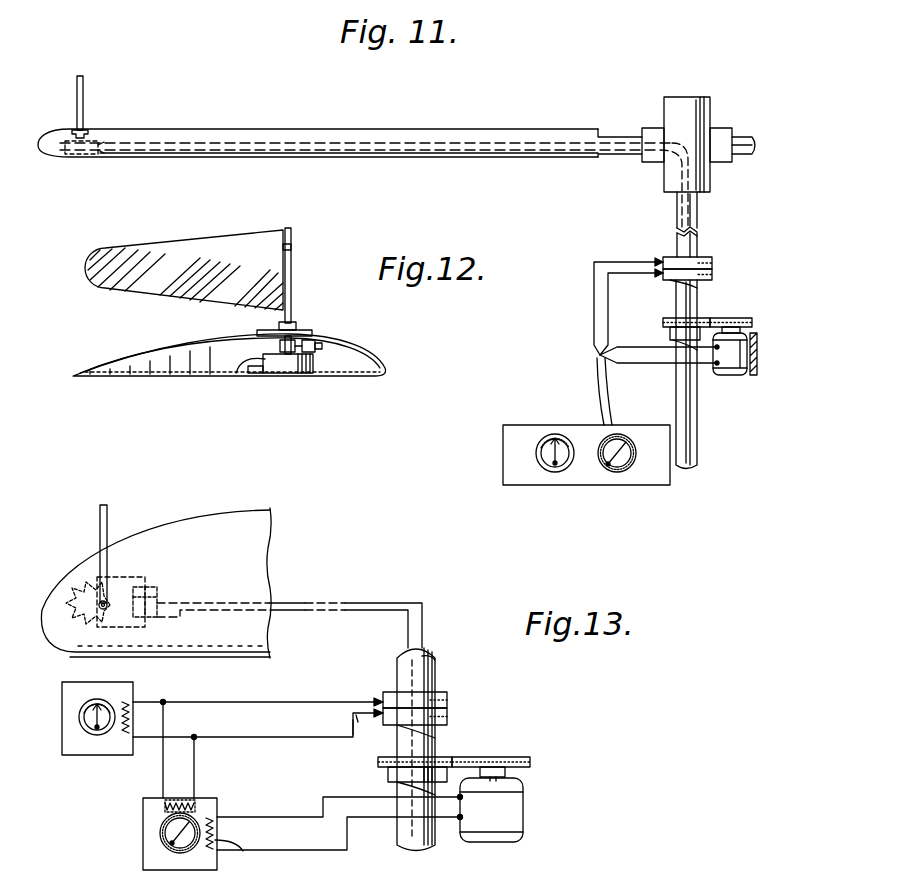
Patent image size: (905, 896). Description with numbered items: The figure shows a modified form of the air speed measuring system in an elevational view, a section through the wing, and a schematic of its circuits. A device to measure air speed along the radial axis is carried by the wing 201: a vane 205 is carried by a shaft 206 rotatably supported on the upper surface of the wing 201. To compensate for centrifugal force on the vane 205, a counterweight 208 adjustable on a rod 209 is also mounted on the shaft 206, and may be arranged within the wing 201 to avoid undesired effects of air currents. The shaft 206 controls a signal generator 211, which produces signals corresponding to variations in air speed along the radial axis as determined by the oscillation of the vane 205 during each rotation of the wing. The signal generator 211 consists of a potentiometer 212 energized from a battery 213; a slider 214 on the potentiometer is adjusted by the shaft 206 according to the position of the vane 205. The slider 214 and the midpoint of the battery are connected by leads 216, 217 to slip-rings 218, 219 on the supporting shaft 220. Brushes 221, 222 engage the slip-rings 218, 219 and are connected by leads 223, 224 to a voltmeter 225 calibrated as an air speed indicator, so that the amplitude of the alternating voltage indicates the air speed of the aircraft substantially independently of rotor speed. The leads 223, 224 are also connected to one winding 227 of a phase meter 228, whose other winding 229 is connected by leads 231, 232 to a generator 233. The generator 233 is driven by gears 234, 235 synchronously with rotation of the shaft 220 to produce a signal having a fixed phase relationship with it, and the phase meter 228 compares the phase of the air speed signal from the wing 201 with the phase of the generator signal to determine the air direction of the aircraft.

In FIG. 11, the wing 201 is at (305, 128).
In FIG. 12, the wing 201 is at (372, 355).
In FIG. 11, the vane 205 is at (84, 88).
In FIG. 12, the vane 205 is at (175, 248).
In FIG. 13, the vane 205 is at (110, 512).
In FIG. 12, the shaft 206 is at (292, 246).
In FIG. 13, the shaft 206 is at (107, 598).
In FIG. 12, the counterweight 208 is at (316, 345).
In FIG. 12, the rod 209 is at (295, 330).
In FIG. 11, the signal generator 211 is at (72, 160).
In FIG. 12, the signal generator 211 is at (290, 373).
In FIG. 13, the potentiometer 212 is at (85, 612).
In FIG. 13, the battery 213 is at (157, 590).
In FIG. 13, the slider 214 is at (85, 592).
In FIG. 13, the lead 216 is at (375, 602).
In FIG. 13, the lead 217 is at (393, 617).
In FIG. 11, the slip-ring 218 is at (712, 262).
In FIG. 13, the slip-ring 218 is at (448, 703).
In FIG. 11, the slip-ring 219 is at (712, 276).
In FIG. 13, the slip-ring 219 is at (448, 714).
In FIG. 11, the supporting shaft 220 is at (700, 218).
In FIG. 13, the supporting shaft 220 is at (437, 668).
In FIG. 11, the brush 221 is at (639, 263).
In FIG. 13, the brush 221 is at (370, 691).
In FIG. 11, the brush 222 is at (625, 260).
In FIG. 13, the brush 222 is at (368, 733).
In FIG. 13, the lead 223 is at (278, 690).
In FIG. 13, the lead 224 is at (277, 738).
In FIG. 11, the voltmeter 225 is at (558, 470).
In FIG. 13, the voltmeter 225 is at (73, 757).
In FIG. 13, the winding 227 is at (184, 803).
In FIG. 11, the phase meter 228 is at (622, 470).
In FIG. 13, the phase meter 228 is at (155, 870).
In FIG. 13, the winding 229 is at (247, 852).
In FIG. 13, the lead 231 is at (306, 816).
In FIG. 13, the lead 232 is at (318, 852).
In FIG. 11, the generator 233 is at (736, 368).
In FIG. 13, the generator 233 is at (523, 802).
In FIG. 11, the gear 234 is at (666, 320).
In FIG. 13, the gear 234 is at (470, 748).
In FIG. 11, the gear 235 is at (746, 319).
In FIG. 13, the gear 235 is at (529, 757).